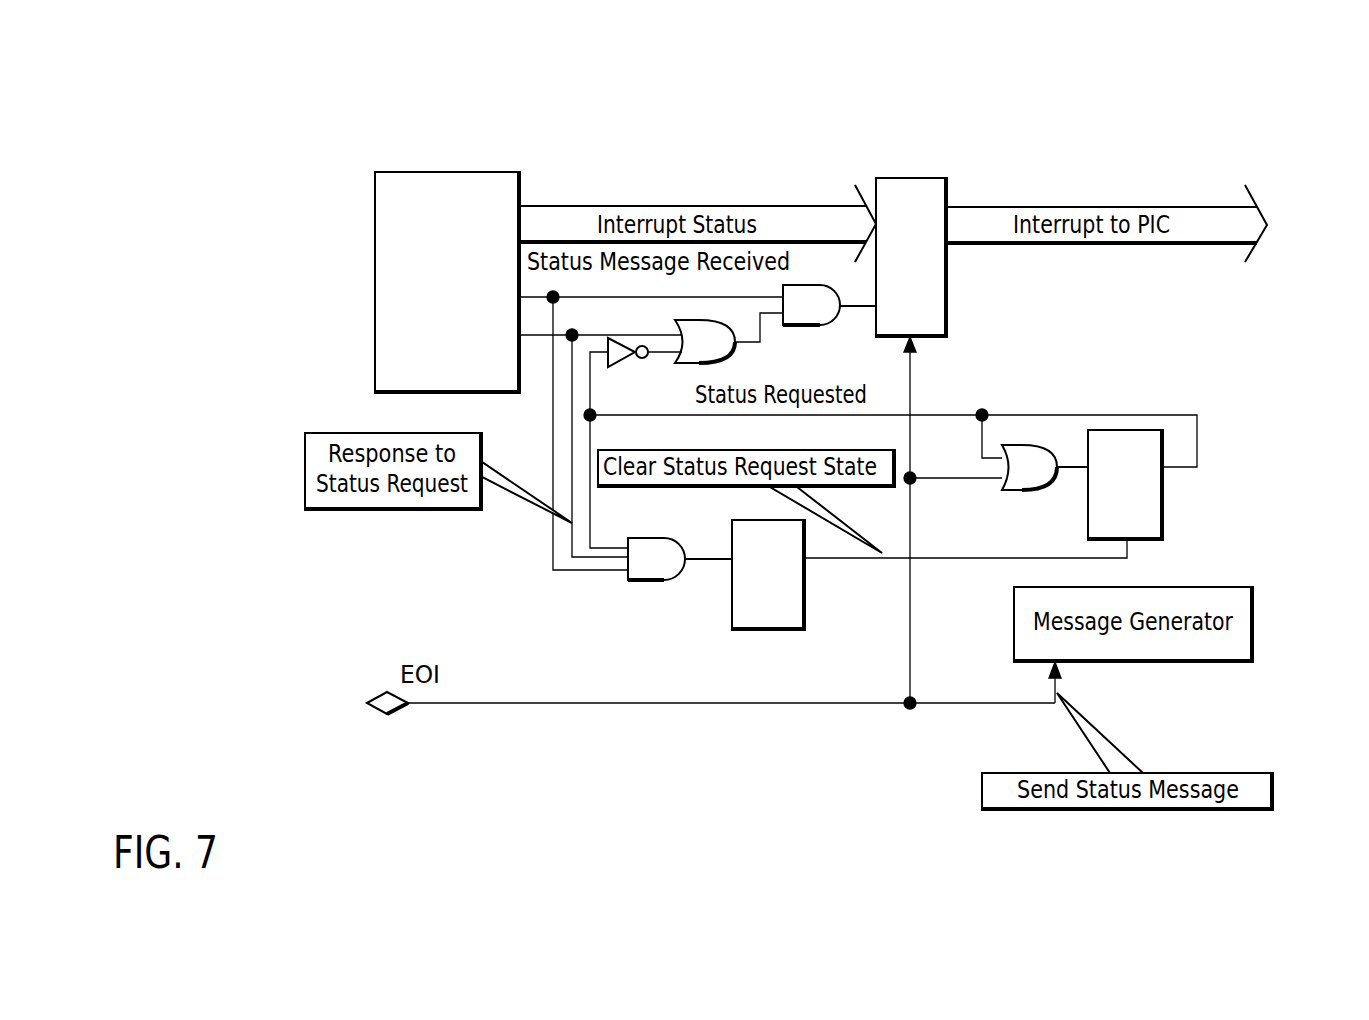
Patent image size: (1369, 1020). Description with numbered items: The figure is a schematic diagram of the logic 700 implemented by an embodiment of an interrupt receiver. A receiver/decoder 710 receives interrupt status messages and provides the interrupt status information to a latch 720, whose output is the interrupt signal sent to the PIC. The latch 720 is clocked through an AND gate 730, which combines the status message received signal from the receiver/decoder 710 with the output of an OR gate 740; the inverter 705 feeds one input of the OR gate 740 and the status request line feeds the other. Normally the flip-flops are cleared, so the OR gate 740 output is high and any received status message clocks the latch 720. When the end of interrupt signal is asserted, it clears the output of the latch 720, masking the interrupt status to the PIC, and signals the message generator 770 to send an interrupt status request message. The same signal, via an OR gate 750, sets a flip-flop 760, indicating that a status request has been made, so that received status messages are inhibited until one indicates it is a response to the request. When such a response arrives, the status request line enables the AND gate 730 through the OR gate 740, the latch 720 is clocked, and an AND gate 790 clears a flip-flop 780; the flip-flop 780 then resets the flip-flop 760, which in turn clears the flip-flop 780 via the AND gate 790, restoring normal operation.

The interrupt status circuit 700 is at (1244, 138).
The inverter 705 is at (620, 367).
The receiver/decoder 710 is at (375, 183).
The latch 720 is at (947, 183).
The AND gate 730 is at (826, 326).
The OR gate 740 is at (736, 350).
The OR gate 750 is at (1027, 490).
The flip-flop 760 is at (1163, 510).
The message generator 770 is at (1014, 622).
The flip-flop 780 is at (793, 630).
The AND gate 790 is at (655, 580).